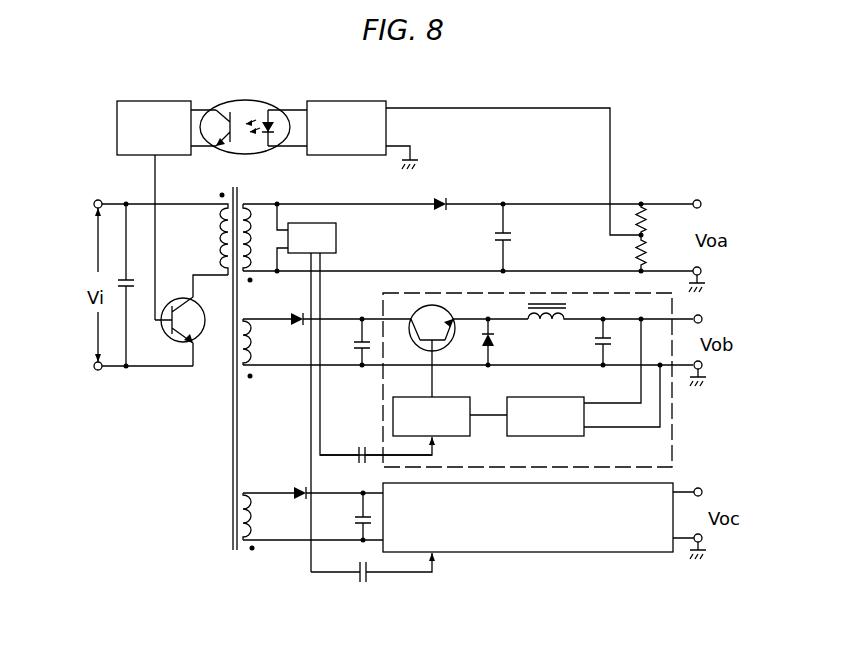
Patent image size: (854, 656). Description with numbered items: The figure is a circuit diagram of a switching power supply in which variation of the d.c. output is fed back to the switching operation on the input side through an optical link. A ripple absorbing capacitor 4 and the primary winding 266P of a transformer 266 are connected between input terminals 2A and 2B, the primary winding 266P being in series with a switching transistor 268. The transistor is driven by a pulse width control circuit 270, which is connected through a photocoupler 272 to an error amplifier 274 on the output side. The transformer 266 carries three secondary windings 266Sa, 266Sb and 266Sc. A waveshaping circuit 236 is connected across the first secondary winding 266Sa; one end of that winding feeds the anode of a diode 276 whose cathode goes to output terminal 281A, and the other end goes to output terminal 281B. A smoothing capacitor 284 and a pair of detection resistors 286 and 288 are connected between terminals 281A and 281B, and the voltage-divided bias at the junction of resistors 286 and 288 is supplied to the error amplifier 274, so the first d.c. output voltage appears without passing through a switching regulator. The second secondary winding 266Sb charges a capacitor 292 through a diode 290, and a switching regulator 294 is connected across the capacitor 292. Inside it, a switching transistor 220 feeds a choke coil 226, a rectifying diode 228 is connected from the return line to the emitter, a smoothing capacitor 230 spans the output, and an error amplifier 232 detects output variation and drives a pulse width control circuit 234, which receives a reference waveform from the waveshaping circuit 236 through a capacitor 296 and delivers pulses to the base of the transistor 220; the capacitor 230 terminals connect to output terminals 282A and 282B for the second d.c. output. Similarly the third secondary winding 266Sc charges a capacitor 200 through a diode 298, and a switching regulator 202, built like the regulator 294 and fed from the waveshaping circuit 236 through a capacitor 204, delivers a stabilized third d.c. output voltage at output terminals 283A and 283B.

The input terminal 2A is at (149, 194).
The input terminal 2B is at (138, 380).
The ripple absorbing capacitor 4 is at (132, 285).
The capacitor 200 is at (356, 515).
The switching regulator 202 is at (538, 517).
The capacitor 204 is at (373, 580).
The switching transistor 220 is at (431, 305).
The choke coil 226 is at (553, 323).
The rectifying diode 228 is at (507, 342).
The smoothing capacitor 230 is at (614, 346).
The error amplifier 232 is at (522, 408).
The pulse width control circuit 234 is at (475, 442).
The waveshaping circuit 236 is at (320, 232).
The transformer 266 is at (233, 479).
The primary winding 266P is at (220, 207).
The secondary winding 266Sa is at (251, 202).
The secondary winding 266Sb is at (258, 370).
The secondary winding 266Sc is at (262, 492).
The switching transistor 268 is at (172, 300).
The pulse width control circuit 270 is at (165, 84).
The photocoupler 272 is at (245, 100).
The error amplifier 274 is at (318, 118).
The diode 276 is at (485, 191).
The output terminal 281A is at (701, 202).
The output terminal 281B is at (701, 272).
The output terminal 282A is at (702, 317).
The output terminal 282B is at (702, 366).
The output terminal 283A is at (702, 490).
The output terminal 283B is at (702, 539).
The smoothing capacitor 284 is at (485, 238).
The resistor 286 is at (659, 220).
The resistor 288 is at (659, 254).
The diode 290 is at (298, 312).
The capacitor 292 is at (358, 340).
The switching regulator 294 is at (725, 422).
The capacitor 296 is at (358, 447).
The diode 298 is at (298, 500).